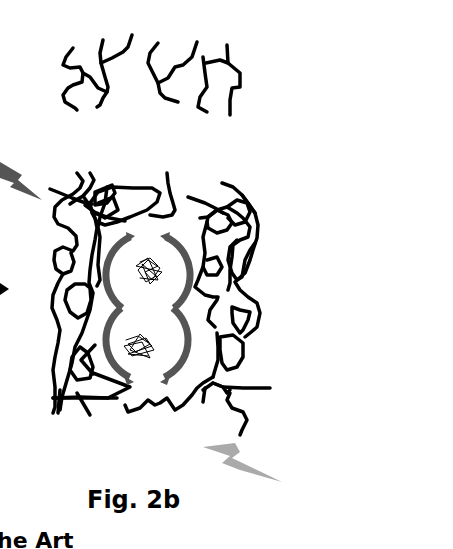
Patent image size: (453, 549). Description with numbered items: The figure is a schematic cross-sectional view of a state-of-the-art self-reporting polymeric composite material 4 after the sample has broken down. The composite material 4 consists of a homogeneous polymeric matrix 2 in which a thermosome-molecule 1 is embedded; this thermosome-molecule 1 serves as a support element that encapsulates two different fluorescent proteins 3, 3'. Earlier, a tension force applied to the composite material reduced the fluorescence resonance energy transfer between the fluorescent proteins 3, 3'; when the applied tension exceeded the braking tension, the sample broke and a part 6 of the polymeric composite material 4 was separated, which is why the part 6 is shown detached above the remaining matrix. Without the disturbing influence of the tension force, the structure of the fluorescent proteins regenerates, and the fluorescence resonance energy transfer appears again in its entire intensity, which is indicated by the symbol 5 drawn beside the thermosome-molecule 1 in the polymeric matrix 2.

The thermosome-molecule 1 is at (180, 265).
The polymeric matrix 2 is at (245, 208).
The fluorescent protein 3 is at (230, 235).
The fluorescent protein 3' is at (219, 362).
The polymeric composite material 4 is at (72, 417).
The symbol (fluorescence resonance energy transfer) 5 is at (287, 447).
The part of the polymeric composite material 6 is at (240, 73).